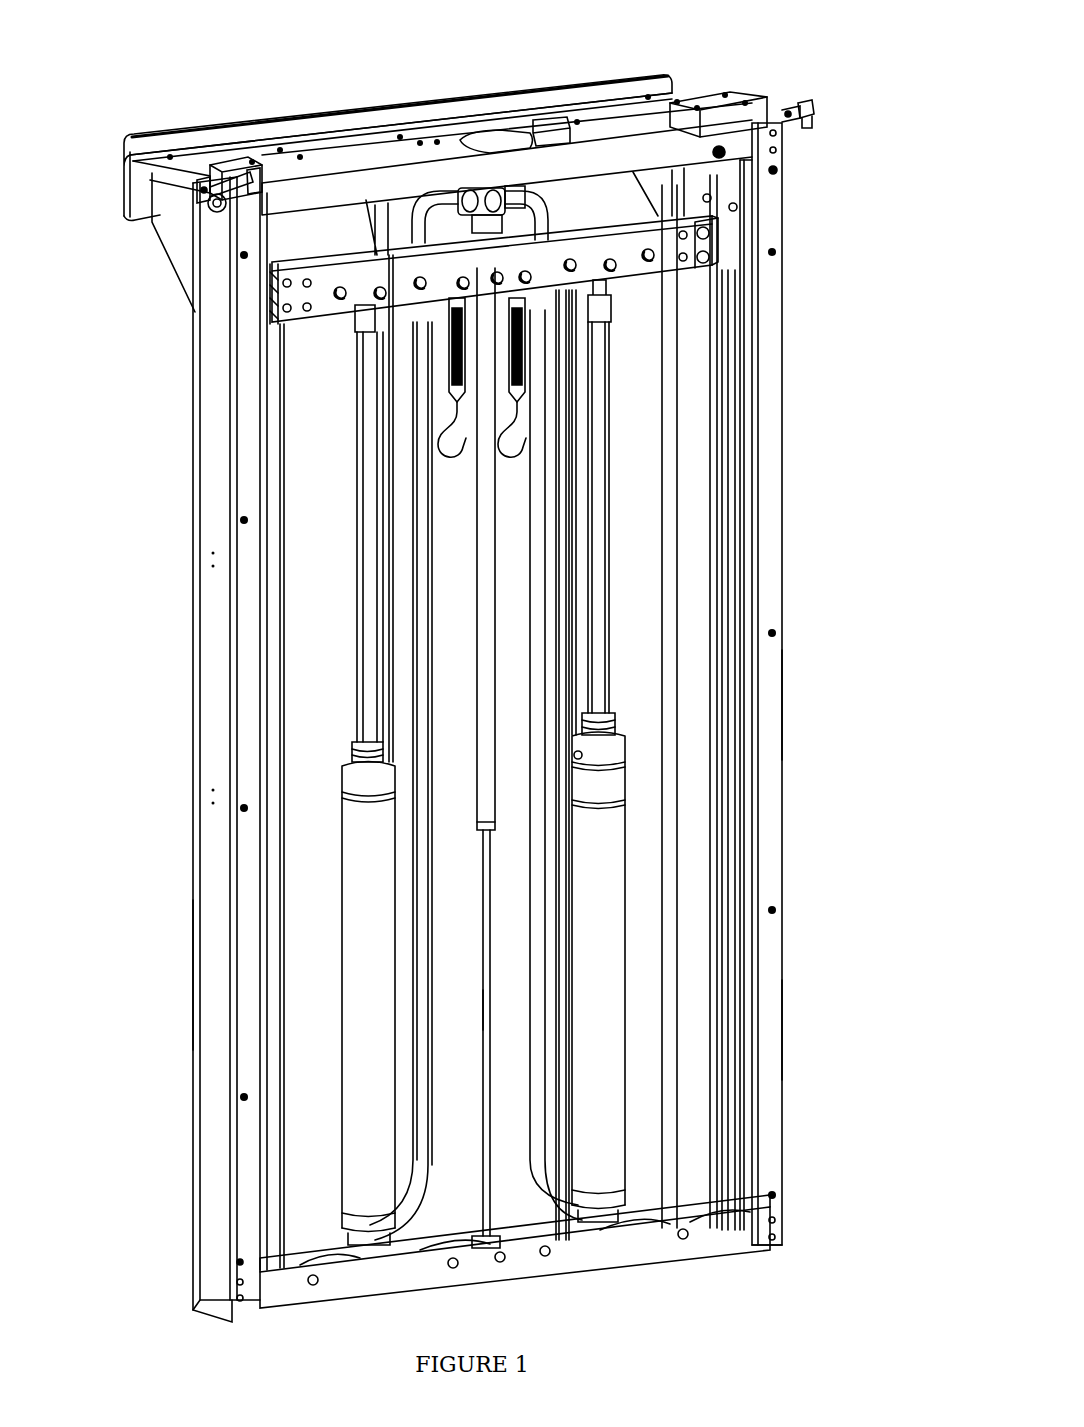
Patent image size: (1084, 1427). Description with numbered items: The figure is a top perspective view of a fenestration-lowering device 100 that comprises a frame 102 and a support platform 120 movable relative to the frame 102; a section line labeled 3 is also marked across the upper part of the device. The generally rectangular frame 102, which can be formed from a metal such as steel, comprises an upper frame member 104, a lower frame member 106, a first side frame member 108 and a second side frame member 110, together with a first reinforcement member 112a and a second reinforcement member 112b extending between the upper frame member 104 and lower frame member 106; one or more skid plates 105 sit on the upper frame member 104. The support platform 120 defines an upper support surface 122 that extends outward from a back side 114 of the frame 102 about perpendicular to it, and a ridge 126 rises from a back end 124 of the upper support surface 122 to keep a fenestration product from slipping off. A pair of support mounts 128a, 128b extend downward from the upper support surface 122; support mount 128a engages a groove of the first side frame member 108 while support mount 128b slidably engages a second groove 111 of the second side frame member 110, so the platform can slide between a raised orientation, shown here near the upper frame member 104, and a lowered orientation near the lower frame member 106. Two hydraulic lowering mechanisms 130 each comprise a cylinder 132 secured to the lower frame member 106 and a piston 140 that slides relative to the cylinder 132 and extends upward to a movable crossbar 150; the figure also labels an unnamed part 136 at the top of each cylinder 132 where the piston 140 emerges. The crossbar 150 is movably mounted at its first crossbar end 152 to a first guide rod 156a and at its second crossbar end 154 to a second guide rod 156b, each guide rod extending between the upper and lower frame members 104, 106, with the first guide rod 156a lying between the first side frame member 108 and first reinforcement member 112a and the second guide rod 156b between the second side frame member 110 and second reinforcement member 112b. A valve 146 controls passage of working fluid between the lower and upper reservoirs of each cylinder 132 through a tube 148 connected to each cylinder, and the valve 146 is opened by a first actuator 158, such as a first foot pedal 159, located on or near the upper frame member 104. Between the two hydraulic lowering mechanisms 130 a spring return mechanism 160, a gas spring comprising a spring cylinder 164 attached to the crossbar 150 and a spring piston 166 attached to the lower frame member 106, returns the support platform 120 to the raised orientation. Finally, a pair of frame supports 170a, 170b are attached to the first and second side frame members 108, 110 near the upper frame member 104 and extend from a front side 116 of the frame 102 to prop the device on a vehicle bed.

The fenestration-lowering device 100 is at (112, 76).
The section line 3 is at (107, 50).
The frame 102 is at (765, 423).
The upper frame member 104 is at (670, 152).
The skid plates 105 is at (300, 135).
The lower frame member 106 is at (630, 1247).
The first side frame member 108 is at (210, 660).
The second side frame member 110 is at (765, 705).
The second groove 111 is at (735, 763).
The first reinforcement member 112a is at (380, 225).
The second reinforcement member 112b is at (573, 205).
The back side 114 is at (180, 988).
The front side 116 is at (765, 1030).
The support platform 120 is at (208, 108).
The upper support surface 122 is at (148, 170).
The back end 124 is at (440, 140).
The ridge 126 is at (145, 144).
The first support mount 128a is at (172, 243).
The second support mount 128b is at (735, 183).
The hydraulic lowering mechanisms 130 is at (474, 750).
The cylinder 132 is at (370, 1090).
The cylinder head 136 is at (355, 748).
The piston 140 is at (370, 570).
The valve 146 is at (500, 192).
The tube 148 is at (413, 510).
The crossbar 150 is at (542, 277).
The first crossbar end 152 is at (290, 297).
The second crossbar end 154 is at (720, 250).
The first guide rod 156a is at (275, 415).
The second guide rod 156b is at (727, 287).
The first actuator 158 is at (474, 118).
The first foot pedal 159 is at (494, 202).
The spring return mechanism 160 is at (460, 1096).
The spring cylinder 164 is at (490, 560).
The spring piston 166 is at (487, 1007).
The first frame support 170a is at (197, 197).
The second frame support 170b is at (795, 108).